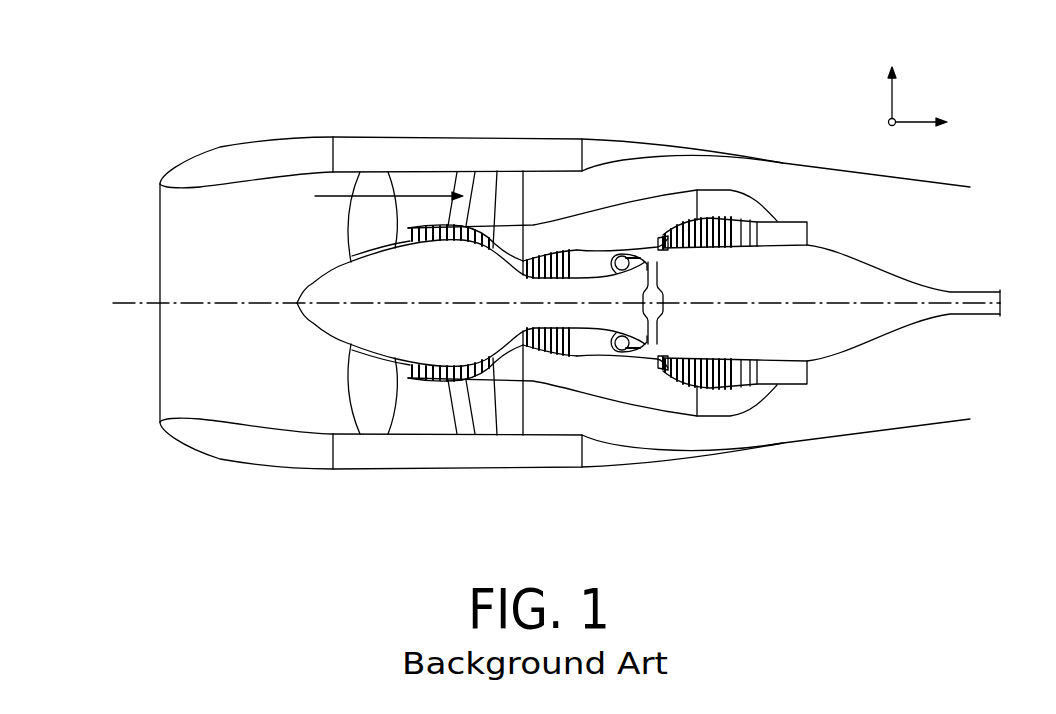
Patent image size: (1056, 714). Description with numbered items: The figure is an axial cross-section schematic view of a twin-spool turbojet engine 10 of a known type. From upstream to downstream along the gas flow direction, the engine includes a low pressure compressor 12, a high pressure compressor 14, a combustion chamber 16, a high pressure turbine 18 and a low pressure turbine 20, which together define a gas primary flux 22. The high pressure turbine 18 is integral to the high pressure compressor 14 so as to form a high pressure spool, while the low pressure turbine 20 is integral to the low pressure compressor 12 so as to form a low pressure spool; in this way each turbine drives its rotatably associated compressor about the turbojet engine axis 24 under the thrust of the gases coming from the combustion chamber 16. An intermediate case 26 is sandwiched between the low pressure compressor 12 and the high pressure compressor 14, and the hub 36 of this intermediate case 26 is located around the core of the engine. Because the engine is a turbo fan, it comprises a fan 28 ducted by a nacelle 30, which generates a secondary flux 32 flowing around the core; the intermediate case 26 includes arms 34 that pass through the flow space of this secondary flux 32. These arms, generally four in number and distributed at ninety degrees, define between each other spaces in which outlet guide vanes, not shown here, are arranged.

The twin-spool turbojet engine 10 is at (698, 124).
The low pressure compressor 12 is at (440, 375).
The high pressure compressor 14 is at (572, 347).
The combustion chamber 16 is at (623, 343).
The high pressure turbine 18 is at (669, 366).
The low pressure turbine 20 is at (727, 378).
The gas primary flux 22 is at (316, 264).
The turbojet engine axis 24 is at (122, 303).
The intermediate case 26 is at (505, 189).
The fan 28 is at (378, 428).
The nacelle 30 is at (353, 137).
The secondary flux 32 is at (321, 195).
The arms 34 is at (513, 424).
The hub 36 is at (513, 238).